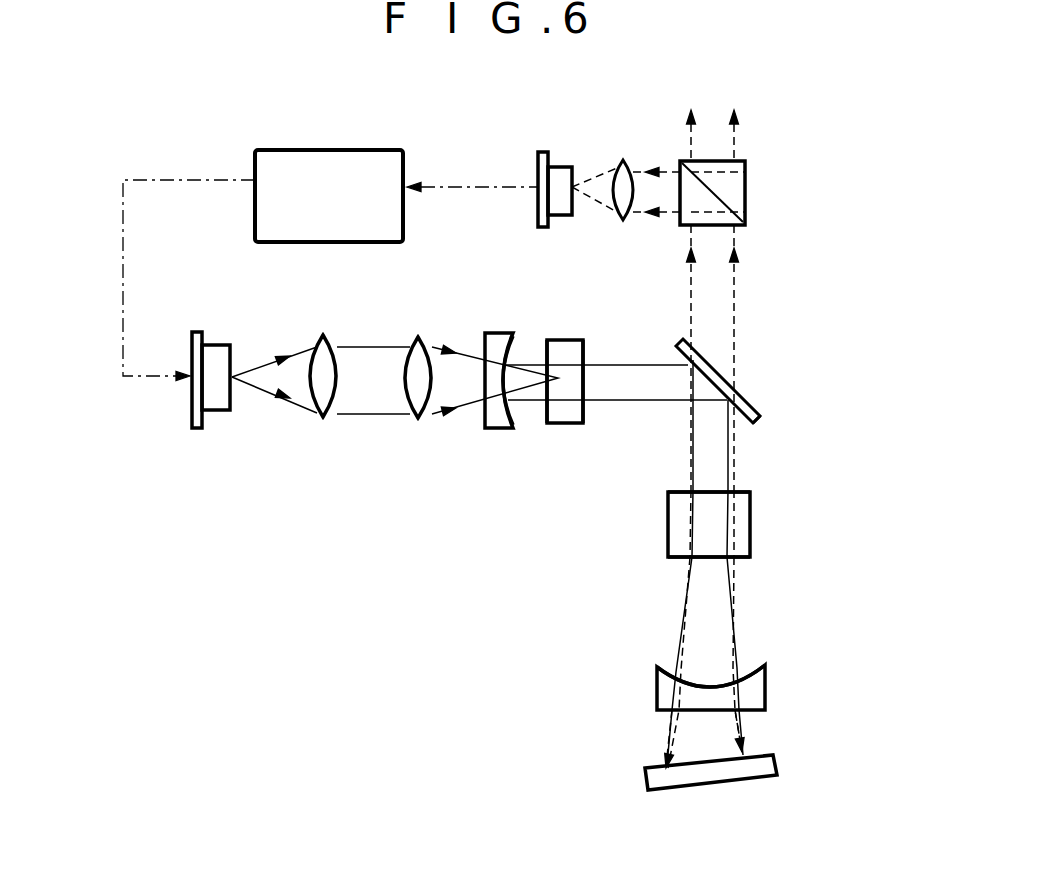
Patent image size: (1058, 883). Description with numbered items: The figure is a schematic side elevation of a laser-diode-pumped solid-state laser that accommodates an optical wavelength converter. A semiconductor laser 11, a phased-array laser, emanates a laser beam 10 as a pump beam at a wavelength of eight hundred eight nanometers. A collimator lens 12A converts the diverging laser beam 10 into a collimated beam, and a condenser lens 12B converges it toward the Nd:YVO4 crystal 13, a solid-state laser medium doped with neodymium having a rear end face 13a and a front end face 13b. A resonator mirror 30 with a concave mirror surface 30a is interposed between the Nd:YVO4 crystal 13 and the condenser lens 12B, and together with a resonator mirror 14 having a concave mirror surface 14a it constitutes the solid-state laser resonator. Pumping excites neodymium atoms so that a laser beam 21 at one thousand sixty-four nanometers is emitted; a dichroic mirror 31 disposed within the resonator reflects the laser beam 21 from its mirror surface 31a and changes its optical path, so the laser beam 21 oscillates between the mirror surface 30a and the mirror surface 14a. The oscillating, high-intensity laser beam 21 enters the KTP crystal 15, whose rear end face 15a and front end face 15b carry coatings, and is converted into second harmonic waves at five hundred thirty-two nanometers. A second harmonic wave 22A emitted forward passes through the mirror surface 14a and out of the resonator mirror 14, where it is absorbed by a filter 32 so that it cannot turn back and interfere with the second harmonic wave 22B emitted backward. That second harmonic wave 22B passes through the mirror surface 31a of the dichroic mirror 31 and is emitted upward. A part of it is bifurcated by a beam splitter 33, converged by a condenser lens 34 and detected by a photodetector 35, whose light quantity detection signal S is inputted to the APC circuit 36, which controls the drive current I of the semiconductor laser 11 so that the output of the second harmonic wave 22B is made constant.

The drive current I is at (217, 180).
The light quantity detection signal S is at (443, 183).
The APC circuit 36 is at (333, 155).
The photodetector 35 is at (555, 170).
The condenser lens 34 is at (624, 160).
The beam splitter 33 is at (747, 177).
The second harmonic wave 22B is at (735, 328).
The semiconductor laser 11 is at (212, 345).
The laser beam 10 is at (300, 352).
The collimator lens 12A is at (322, 335).
The condenser lens 12B is at (413, 337).
The resonator mirror 30 is at (470, 446).
The concave mirror surface 30a is at (517, 412).
The Nd:YVO4 crystal 13 is at (560, 325).
The rear end face 13a is at (542, 350).
The front end face 13b is at (587, 350).
The dichroic mirror 31 is at (758, 394).
The mirror surface 31a is at (745, 427).
The KTP crystal 15 is at (765, 526).
The rear end face 15a is at (740, 488).
The front end face 15b is at (743, 557).
The laser beam 21 is at (693, 593).
The resonator mirror 14 is at (645, 685).
The concave mirror surface 14a is at (670, 673).
The second harmonic wave 22A is at (670, 723).
The filter 32 is at (773, 757).